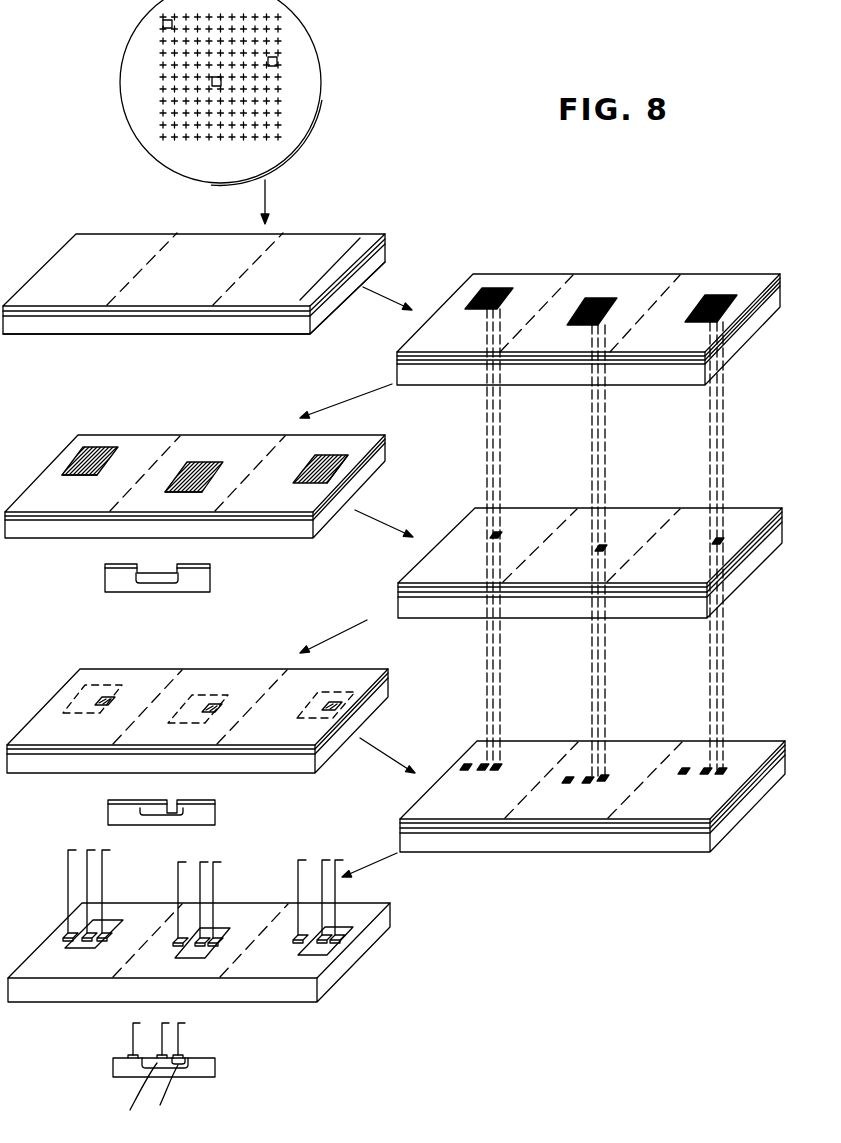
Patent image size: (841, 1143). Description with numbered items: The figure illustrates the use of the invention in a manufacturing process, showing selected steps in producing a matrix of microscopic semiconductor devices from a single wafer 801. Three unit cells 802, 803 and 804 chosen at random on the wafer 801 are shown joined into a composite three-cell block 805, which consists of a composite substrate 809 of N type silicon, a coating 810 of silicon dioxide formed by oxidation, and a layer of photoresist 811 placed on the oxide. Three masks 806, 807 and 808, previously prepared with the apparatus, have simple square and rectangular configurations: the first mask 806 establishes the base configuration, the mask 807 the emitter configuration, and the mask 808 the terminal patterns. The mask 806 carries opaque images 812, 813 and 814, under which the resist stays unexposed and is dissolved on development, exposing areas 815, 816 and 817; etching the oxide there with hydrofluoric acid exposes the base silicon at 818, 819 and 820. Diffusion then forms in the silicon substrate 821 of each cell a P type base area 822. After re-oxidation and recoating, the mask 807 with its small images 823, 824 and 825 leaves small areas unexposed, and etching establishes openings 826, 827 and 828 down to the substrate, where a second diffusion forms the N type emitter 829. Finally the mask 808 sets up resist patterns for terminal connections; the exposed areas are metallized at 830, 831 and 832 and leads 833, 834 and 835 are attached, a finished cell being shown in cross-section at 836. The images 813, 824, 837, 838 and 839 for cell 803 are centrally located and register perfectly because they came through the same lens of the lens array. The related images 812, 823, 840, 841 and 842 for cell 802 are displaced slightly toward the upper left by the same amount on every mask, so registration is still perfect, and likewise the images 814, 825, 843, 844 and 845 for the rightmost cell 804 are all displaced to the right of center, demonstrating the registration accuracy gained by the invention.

The wafer 801 is at (298, 113).
The unit cell 802 is at (163, 24).
The unit cell 803 is at (212, 82).
The unit cell 804 is at (278, 60).
The composite three-cell block 805 is at (128, 343).
The first mask 806 is at (742, 282).
The mask 807 is at (742, 513).
The mask 808 is at (420, 805).
The composite substrate 809 is at (372, 262).
The coating of silicon dioxide 810 is at (386, 248).
The layer of photoresist 811 is at (385, 236).
The opaque image 812 is at (495, 290).
The opaque image 813 is at (600, 296).
The opaque image 814 is at (723, 292).
The exposed area 815 is at (100, 462).
The exposed area 816 is at (206, 464).
The exposed area 817 is at (308, 482).
The exposed base silicon material 818 is at (85, 477).
The exposed base silicon material 819 is at (183, 486).
The exposed base silicon material 820 is at (316, 466).
The silicon substrate 821 is at (148, 592).
The base area 822 is at (165, 571).
The small image 823 is at (500, 535).
The small image 824 is at (604, 545).
The small image 825 is at (712, 543).
The opening 826 is at (110, 702).
The opening 827 is at (214, 708).
The opening 828 is at (322, 706).
The emitter 829 is at (172, 806).
The metallized area 830 is at (62, 935).
The metallized area 831 is at (85, 940).
The metallized area 832 is at (104, 936).
The lead 833 is at (68, 863).
The lead 834 is at (84, 866).
The lead 835 is at (100, 888).
The cross-section of a typical unit cell 836 is at (231, 1062).
The image 837 is at (562, 778).
The image 838 is at (584, 784).
The image 839 is at (607, 775).
The image 840 is at (465, 765).
The image 841 is at (482, 772).
The image 842 is at (494, 772).
The image 843 is at (680, 776).
The image 844 is at (707, 764).
The image 845 is at (718, 776).